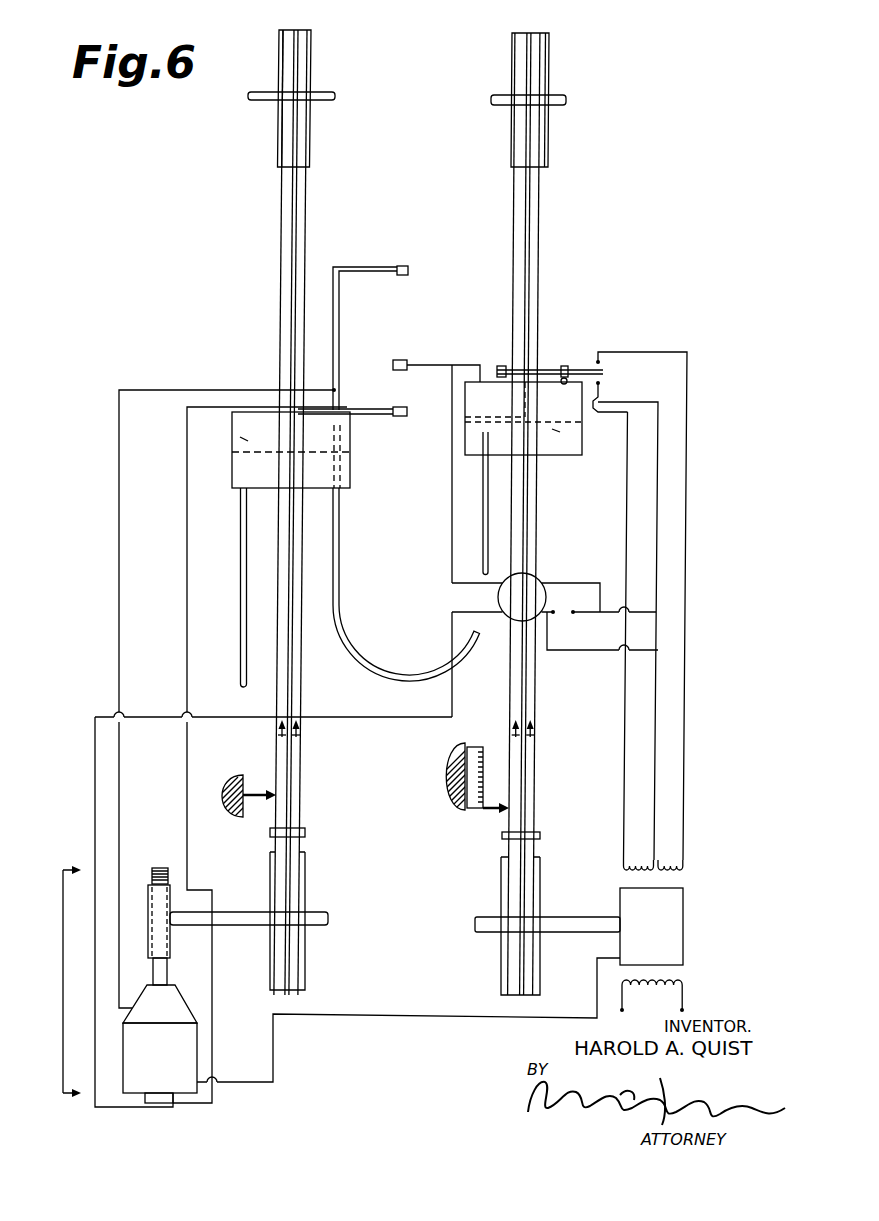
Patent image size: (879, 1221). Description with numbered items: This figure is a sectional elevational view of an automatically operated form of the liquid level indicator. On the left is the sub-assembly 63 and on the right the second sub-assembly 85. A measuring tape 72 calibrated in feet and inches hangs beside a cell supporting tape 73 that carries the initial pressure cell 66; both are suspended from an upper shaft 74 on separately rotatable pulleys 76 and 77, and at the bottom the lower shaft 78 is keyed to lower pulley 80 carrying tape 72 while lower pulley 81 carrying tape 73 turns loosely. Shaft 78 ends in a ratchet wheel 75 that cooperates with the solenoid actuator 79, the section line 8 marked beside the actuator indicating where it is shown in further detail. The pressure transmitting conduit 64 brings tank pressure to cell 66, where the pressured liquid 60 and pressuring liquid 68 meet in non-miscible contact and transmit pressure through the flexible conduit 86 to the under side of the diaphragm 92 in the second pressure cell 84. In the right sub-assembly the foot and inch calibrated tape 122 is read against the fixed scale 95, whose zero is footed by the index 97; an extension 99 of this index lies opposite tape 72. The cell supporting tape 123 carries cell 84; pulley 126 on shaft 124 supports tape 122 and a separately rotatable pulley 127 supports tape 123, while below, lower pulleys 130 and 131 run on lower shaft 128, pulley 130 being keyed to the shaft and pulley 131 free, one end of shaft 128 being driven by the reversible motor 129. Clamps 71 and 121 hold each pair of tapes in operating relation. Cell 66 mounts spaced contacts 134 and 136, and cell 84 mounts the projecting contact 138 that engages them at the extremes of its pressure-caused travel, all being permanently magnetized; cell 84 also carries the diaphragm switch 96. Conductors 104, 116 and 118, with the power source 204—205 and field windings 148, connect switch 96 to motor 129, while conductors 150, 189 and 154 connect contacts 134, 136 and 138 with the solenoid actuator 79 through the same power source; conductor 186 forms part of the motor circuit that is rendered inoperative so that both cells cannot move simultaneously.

The section line 8- 8 is at (51, 986).
The pressured liquid 60 is at (253, 473).
The sub-assembly 63 is at (274, 332).
The pressure transmitting conduit 64 is at (240, 593).
The initial pressure cell 66 is at (230, 455).
The pressuring liquid 68 is at (242, 438).
The clamp 71 is at (304, 829).
The measuring tape 72 is at (306, 232).
The cell supporting tape 73 is at (281, 243).
The pin 74 is at (320, 96).
The ratchet wheel 75 is at (156, 872).
The pulley 76 is at (311, 46).
The pulley 77 is at (280, 46).
The lower shaft 78 is at (321, 915).
The solenoid actuator 79 is at (206, 1041).
The lower pulley 80 is at (302, 881).
The lower pulley 81 is at (272, 881).
The second pressure cell 84 is at (586, 446).
The second sub-assembly 85 is at (544, 323).
The flexible conduit 86 is at (363, 666).
The diaphragm 92 is at (548, 421).
The fixed scale 95 is at (474, 745).
The diaphragm switch 96 is at (557, 362).
The index 97 is at (490, 804).
The index extension 99 is at (261, 790).
The conductor 104 is at (622, 743).
The conductor 116 is at (690, 443).
The conductor 118 is at (659, 489).
The clamp 121 is at (541, 832).
The foot and inch calibrated tape 122 is at (518, 221).
The cell supporting tape 123 is at (538, 229).
The shaft 124 is at (553, 97).
The pulley 126 is at (511, 62).
The pulley 127 is at (549, 62).
The lower shaft 128 is at (562, 926).
The reversible motor 129 is at (687, 932).
The lower pulley 130 is at (503, 911).
The lower pulley 131 is at (542, 883).
The contact 134 is at (407, 265).
The contact 136 is at (400, 418).
The contact 138 is at (402, 359).
The field windings 148 is at (684, 1002).
The conductor 150 is at (118, 488).
The conductor 154 is at (353, 719).
The conductor 186 is at (394, 1018).
The conductor 189 is at (188, 514).
The power source 204 is at (577, 616).
The power source 205 is at (566, 598).